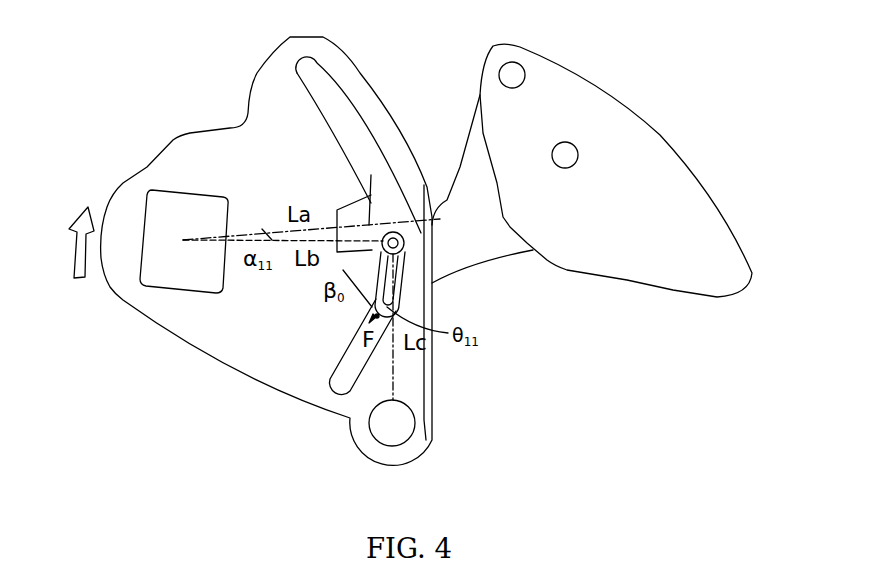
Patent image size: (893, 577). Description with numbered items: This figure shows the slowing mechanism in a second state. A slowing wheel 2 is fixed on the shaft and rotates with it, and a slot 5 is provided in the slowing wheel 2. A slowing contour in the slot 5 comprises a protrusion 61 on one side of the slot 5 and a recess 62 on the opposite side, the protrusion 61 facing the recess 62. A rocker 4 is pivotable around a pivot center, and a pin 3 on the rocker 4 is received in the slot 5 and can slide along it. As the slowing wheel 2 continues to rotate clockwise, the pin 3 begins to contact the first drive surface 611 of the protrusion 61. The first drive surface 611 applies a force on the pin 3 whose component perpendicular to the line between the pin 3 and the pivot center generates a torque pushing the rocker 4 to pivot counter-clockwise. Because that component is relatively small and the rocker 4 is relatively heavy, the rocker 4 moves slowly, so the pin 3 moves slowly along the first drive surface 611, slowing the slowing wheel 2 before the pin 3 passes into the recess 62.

The slowing wheel 2 is at (200, 157).
The pin 3 is at (403, 248).
The rocker 4 is at (472, 175).
The slot 5 is at (293, 73).
The protrusion 61 is at (368, 223).
The first drive surface 611 is at (388, 232).
The recess 62 is at (340, 223).